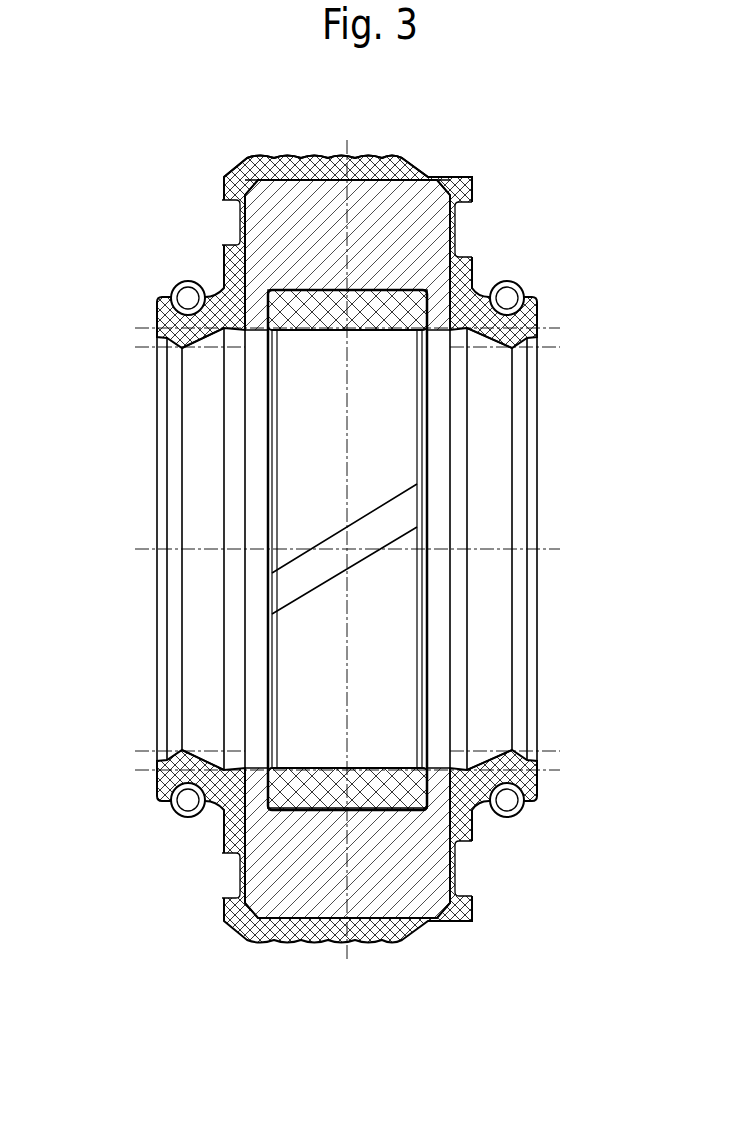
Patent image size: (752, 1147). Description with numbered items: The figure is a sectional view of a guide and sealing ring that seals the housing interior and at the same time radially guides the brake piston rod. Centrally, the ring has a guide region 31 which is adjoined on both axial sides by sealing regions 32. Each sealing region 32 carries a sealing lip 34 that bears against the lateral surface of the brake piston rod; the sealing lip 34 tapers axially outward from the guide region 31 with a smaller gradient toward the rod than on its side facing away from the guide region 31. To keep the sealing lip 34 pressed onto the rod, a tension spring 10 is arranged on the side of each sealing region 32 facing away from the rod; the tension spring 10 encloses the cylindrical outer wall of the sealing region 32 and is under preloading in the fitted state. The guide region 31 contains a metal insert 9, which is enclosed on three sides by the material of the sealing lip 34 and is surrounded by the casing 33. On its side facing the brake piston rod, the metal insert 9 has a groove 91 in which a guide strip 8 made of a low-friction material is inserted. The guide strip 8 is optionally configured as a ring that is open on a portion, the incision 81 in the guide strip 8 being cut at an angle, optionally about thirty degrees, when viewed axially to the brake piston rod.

The guide strip 8 is at (447, 550).
The metal insert 9 is at (407, 243).
The tension spring 10 is at (172, 290).
The guide region 31 is at (398, 759).
The sealing region 32 is at (200, 346).
The casing 33 is at (247, 173).
The sealing lip 34 is at (160, 338).
The incision 81 is at (405, 515).
The groove 91 is at (222, 263).